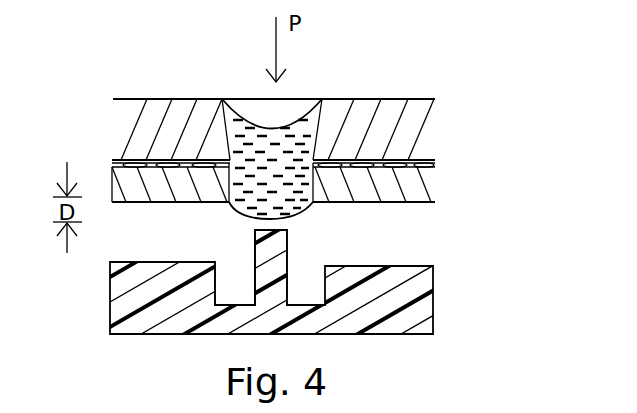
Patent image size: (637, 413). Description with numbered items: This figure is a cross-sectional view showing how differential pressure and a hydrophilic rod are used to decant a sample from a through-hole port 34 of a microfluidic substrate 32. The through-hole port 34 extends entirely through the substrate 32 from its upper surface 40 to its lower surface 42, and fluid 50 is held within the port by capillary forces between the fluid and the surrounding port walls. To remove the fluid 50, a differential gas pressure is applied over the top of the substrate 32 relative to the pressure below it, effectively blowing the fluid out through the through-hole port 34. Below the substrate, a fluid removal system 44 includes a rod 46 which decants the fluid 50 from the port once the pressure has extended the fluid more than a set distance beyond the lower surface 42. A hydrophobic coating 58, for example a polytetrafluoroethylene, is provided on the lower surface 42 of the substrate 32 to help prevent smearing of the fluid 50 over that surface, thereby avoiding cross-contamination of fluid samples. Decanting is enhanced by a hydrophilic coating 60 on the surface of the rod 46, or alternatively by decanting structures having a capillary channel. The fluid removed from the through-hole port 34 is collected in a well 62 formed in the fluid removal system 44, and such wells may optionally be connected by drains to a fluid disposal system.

The microfluidic substrate 32 is at (382, 116).
The through-hole port 34 is at (288, 142).
The upper surface 40 is at (270, 109).
The lower surface 42 is at (400, 202).
The fluid removal system 44 is at (301, 223).
The rod 46 is at (305, 260).
The fluid 50 is at (170, 195).
The hydrophobic coating 58 is at (374, 227).
The hydrophilic coating 60 is at (212, 265).
The well 62 is at (235, 283).